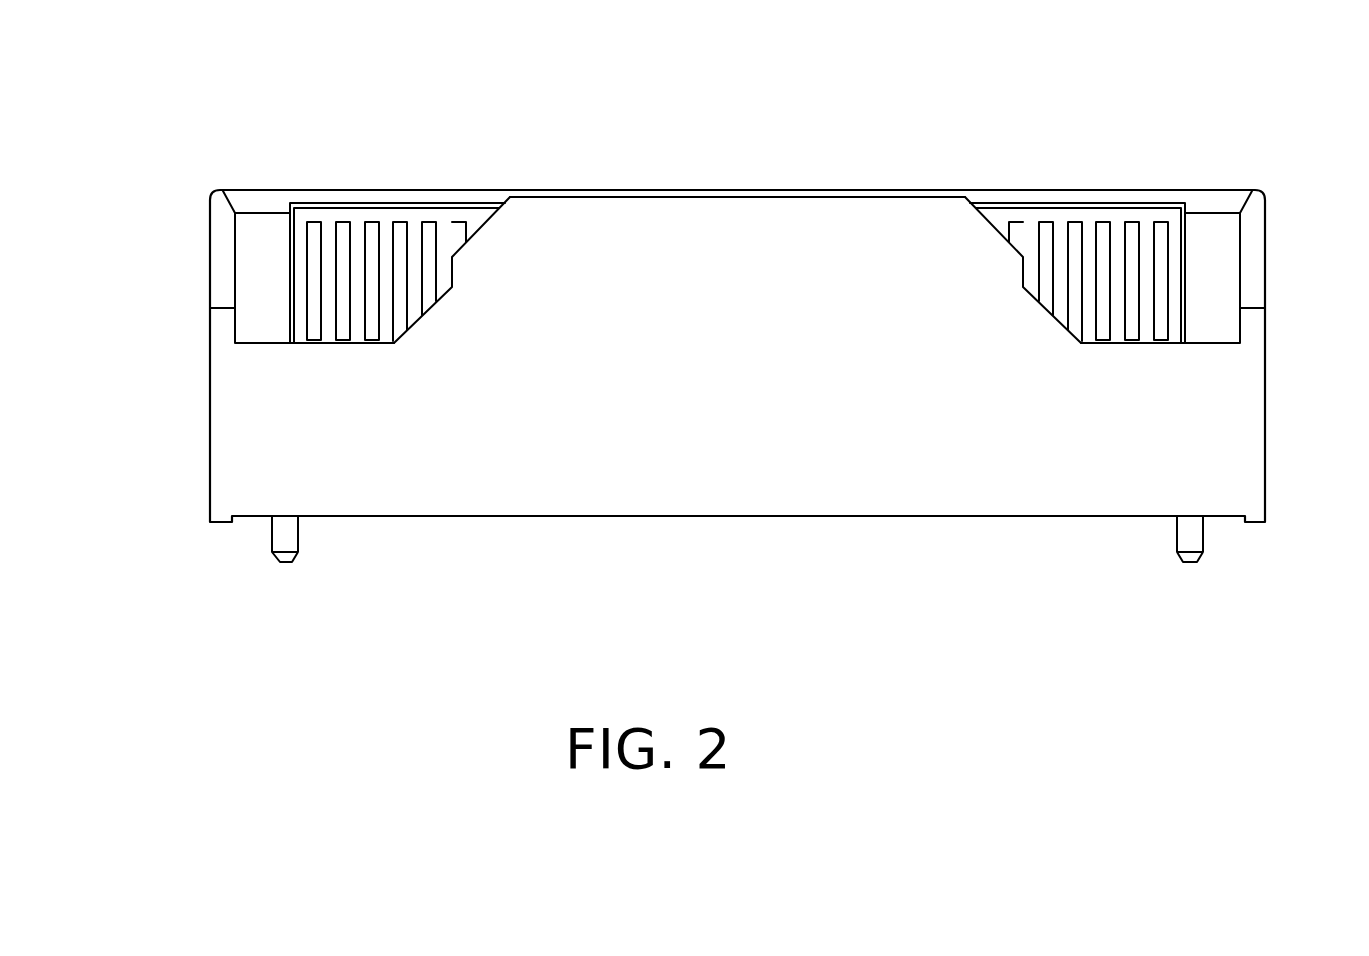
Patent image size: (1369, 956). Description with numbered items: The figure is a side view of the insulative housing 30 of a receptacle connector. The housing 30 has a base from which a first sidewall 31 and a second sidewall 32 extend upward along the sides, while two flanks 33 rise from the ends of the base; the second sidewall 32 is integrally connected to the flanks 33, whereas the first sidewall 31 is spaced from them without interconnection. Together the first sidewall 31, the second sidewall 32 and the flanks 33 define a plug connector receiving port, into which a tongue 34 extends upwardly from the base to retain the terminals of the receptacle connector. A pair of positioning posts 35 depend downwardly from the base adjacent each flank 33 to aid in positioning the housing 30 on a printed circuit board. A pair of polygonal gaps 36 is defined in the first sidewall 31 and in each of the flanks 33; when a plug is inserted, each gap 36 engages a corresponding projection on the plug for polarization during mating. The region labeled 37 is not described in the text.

The insulative housing 30 is at (870, 523).
The first sidewall 31 is at (673, 243).
The second sidewall 32 is at (267, 202).
The flanks 33 is at (1248, 268).
The tongue 34 is at (388, 218).
The positioning posts 35 is at (283, 535).
The polygonal gaps 36 is at (413, 315).
The terminal receiving passageways 37 is at (1072, 243).